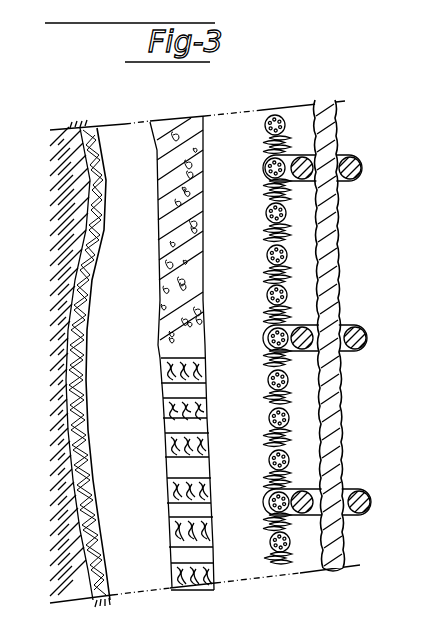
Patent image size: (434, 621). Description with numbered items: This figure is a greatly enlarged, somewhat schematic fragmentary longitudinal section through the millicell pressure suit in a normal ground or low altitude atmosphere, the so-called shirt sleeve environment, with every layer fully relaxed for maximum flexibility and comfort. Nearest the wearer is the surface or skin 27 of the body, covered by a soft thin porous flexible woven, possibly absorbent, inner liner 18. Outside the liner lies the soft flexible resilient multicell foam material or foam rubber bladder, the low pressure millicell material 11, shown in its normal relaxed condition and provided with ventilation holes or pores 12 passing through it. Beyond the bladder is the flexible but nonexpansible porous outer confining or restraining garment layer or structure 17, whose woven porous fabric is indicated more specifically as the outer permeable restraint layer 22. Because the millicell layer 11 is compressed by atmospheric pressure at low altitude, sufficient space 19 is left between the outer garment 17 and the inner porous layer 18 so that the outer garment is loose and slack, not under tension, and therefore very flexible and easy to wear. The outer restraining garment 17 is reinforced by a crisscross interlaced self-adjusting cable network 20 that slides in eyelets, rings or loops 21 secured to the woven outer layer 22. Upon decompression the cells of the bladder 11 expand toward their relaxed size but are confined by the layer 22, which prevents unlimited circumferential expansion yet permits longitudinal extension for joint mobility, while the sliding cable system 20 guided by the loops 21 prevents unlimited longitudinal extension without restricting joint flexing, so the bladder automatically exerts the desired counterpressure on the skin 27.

The low pressure millicell material 11 is at (182, 143).
The ventilation pores 12 is at (197, 378).
The porous outer garment layer 17 is at (305, 378).
The inner liner 18 is at (95, 212).
The space 19 is at (130, 279).
The cable network 20 is at (333, 207).
The eyelet 21 is at (362, 158).
The woven porous outer garment layer 22 is at (283, 290).
The skin 27 is at (86, 497).